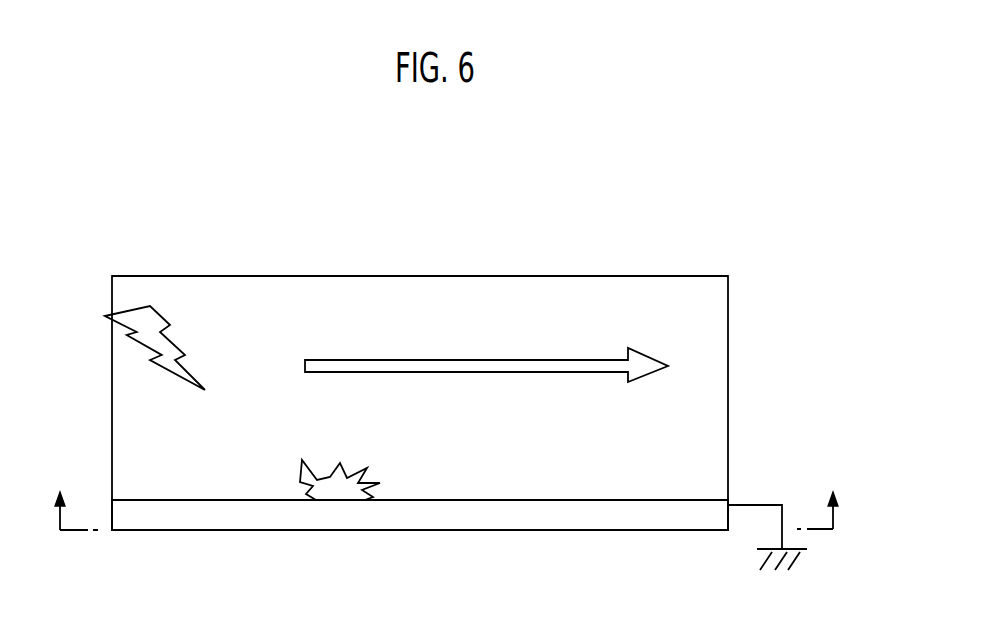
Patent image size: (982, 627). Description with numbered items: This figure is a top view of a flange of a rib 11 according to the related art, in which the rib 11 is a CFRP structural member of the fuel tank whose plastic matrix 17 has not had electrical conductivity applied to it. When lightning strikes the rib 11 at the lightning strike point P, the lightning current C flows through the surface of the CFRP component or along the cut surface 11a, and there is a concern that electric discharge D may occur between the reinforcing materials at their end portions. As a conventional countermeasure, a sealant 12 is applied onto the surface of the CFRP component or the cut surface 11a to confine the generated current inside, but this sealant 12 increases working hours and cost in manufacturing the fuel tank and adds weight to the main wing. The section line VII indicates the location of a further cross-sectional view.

The rib 11 is at (578, 268).
The matrix 17 is at (362, 292).
The cut surface 11a is at (213, 500).
The sealant 12 is at (280, 530).
The lightning strike point P is at (147, 340).
The lightning current C is at (473, 365).
The electric discharge D is at (338, 500).
The section line VII- VII is at (448, 527).